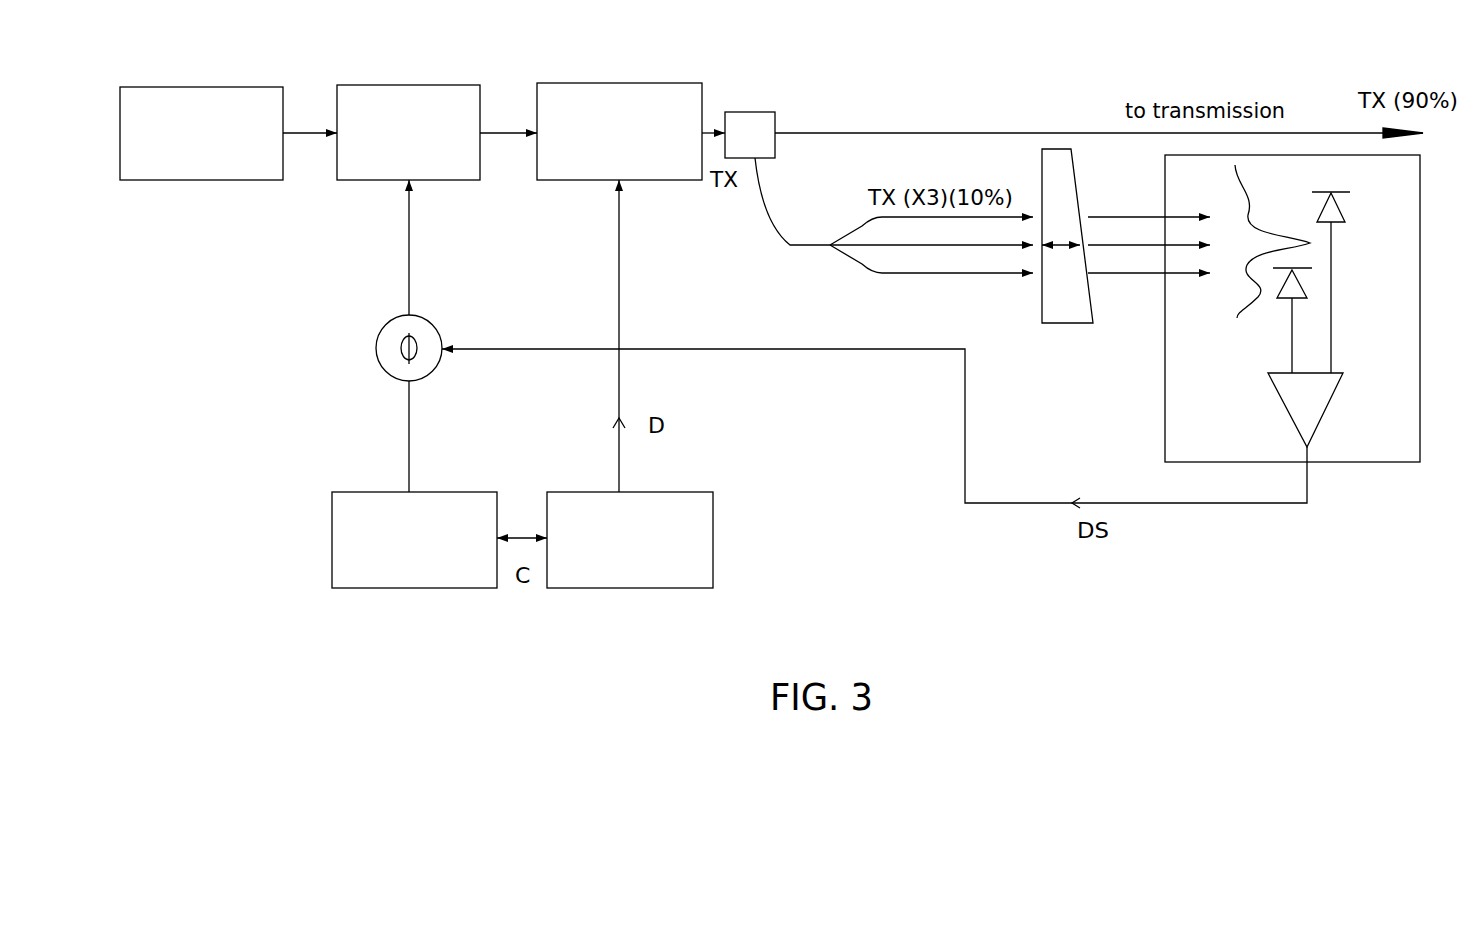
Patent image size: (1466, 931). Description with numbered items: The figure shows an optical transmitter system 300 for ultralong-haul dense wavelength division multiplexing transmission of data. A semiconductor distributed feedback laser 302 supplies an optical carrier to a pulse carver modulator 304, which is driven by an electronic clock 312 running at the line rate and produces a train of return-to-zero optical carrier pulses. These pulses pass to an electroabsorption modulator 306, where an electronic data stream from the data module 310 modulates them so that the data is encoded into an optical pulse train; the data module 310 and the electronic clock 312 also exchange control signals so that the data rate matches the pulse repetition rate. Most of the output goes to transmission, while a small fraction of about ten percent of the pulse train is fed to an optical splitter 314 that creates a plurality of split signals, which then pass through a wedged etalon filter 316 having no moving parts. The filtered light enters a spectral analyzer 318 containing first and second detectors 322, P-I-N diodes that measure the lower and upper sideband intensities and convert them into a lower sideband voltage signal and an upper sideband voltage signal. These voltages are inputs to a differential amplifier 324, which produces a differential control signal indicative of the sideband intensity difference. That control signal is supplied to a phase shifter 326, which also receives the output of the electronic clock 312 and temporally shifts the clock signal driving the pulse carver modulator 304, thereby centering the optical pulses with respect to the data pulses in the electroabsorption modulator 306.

The system 300 is at (990, 643).
The semiconductor distributed feedback laser 302 is at (168, 86).
The pulse carver modulator 304 is at (377, 85).
The electroabsorption modulator 306 is at (577, 83).
The data module 310 is at (588, 588).
The electronic clock 312 is at (370, 588).
The optical splitter 314 is at (752, 112).
The wedged etalon filter 316 is at (1042, 302).
The spectral analyzer 318 is at (1340, 462).
The first and second detectors 322 is at (1340, 210).
The differential amplifier 324 is at (1279, 398).
The phase shifter 326 is at (376, 348).